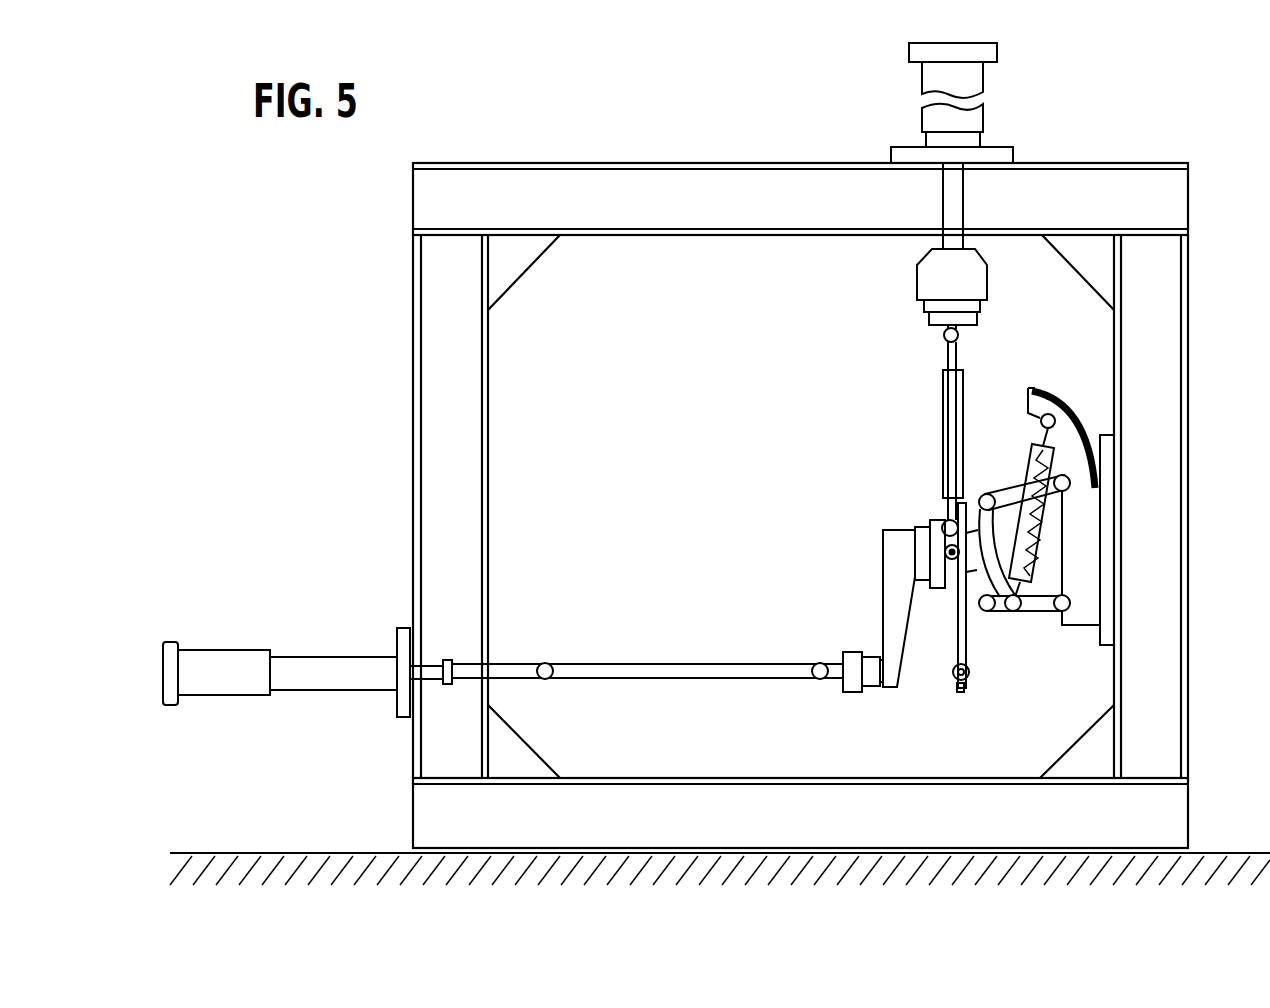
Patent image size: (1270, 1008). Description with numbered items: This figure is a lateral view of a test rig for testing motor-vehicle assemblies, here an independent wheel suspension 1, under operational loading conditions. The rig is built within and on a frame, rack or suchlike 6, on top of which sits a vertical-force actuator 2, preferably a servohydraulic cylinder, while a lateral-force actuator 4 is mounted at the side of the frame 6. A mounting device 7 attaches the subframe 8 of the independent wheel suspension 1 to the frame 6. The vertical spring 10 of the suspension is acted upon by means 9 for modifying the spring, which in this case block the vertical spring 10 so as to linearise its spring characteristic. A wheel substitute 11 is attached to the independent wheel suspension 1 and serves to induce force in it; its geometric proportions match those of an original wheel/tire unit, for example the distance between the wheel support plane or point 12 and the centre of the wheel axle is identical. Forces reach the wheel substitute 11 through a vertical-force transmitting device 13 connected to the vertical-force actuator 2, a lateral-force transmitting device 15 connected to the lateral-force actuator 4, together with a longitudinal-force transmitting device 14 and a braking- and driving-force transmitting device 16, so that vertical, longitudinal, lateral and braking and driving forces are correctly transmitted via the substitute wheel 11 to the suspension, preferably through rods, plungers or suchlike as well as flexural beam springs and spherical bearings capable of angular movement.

The independent wheel suspension 1 is at (1000, 600).
The vertical-force actuator 2 is at (963, 117).
The lateral-force actuator 4 is at (243, 667).
The frame 6 is at (444, 336).
The mounting device 7 is at (1105, 567).
The subframe 8 is at (1068, 426).
The means for modifying vertical spring 9 is at (1050, 515).
The vertical spring 10 is at (1030, 480).
The wheel substitute 11 is at (930, 518).
The wheel support plane or point 12 is at (948, 670).
The vertical-force transmitting device 13 is at (940, 430).
The longitudinal-force transmitting device 14 is at (947, 552).
The lateral-force transmitting device 15 is at (680, 671).
The braking- and driving-force transmitting device 16 is at (963, 688).